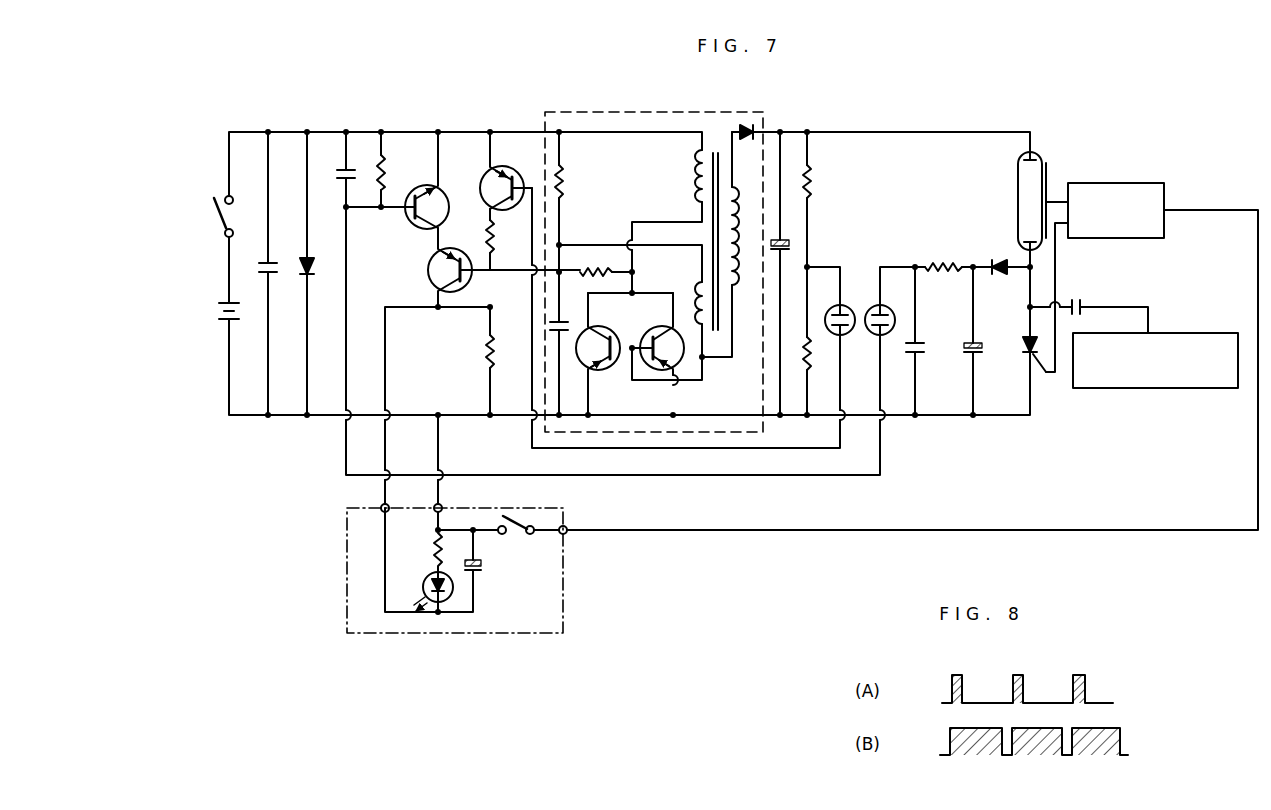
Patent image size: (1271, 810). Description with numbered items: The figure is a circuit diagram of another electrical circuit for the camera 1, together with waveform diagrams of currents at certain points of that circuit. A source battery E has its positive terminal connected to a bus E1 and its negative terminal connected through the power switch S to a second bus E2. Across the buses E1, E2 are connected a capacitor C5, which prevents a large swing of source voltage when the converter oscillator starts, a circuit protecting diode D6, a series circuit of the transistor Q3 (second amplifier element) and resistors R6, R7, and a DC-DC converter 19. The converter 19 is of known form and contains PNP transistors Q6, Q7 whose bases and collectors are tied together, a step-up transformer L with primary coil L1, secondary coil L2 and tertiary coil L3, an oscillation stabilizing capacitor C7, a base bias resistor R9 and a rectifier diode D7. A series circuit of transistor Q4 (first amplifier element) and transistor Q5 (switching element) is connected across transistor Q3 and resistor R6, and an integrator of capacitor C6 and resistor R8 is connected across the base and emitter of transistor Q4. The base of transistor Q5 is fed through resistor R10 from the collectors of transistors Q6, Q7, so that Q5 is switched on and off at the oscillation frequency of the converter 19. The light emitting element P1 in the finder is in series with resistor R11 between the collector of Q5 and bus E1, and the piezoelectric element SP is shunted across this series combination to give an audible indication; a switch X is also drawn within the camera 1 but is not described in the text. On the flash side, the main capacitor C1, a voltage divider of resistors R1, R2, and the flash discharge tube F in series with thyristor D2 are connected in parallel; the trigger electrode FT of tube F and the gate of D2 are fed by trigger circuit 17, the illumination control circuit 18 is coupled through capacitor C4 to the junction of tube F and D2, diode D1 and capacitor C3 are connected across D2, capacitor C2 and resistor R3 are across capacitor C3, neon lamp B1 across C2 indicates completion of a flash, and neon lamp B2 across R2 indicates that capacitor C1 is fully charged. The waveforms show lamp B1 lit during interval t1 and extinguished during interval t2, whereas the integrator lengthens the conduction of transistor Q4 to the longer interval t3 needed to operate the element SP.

In FIG. 7, the power switch S is at (219, 223).
In FIG. 7, the capacitor C5 is at (260, 265).
In FIG. 7, the source battery E is at (217, 316).
In FIG. 7, the circuit protecting diode D6 is at (310, 276).
In FIG. 7, the capacitor C6 is at (339, 172).
In FIG. 7, the resistor R8 is at (387, 168).
In FIG. 7, the transistor Q4 is at (444, 209).
In FIG. 8, the transistor Q4 is at (1022, 742).
In FIG. 7, the transistor Q5 is at (430, 292).
In FIG. 7, the transistor Q3 is at (512, 173).
In FIG. 7, the resistor R6 is at (496, 233).
In FIG. 7, the resistor R7 is at (492, 363).
In FIG. 7, the bus E2 is at (402, 131).
In FIG. 7, the bus E1 is at (319, 417).
In FIG. 7, the DC-DC converter 19 is at (640, 112).
In FIG. 7, the step-up transformer L is at (717, 136).
In FIG. 7, the rectifier diode D7 is at (748, 124).
In FIG. 7, the base bias resistor R9 is at (566, 178).
In FIG. 7, the resistor R10 is at (597, 268).
In FIG. 7, the tertiary coil L3 is at (696, 182).
In FIG. 7, the primary coil L1 is at (695, 292).
In FIG. 7, the secondary coil L2 is at (736, 282).
In FIG. 7, the oscillation stabilizing capacitor C7 is at (559, 323).
In FIG. 7, the transistor Q7 is at (656, 327).
In FIG. 7, the transistor Q6 is at (603, 370).
In FIG. 7, the main capacitor C1 is at (786, 249).
In FIG. 7, the resistor R1 is at (813, 180).
In FIG. 7, the resistor R2 is at (812, 365).
In FIG. 7, the neon lamp B2 is at (831, 306).
In FIG. 7, the light emitting element B1 is at (883, 306).
In FIG. 8, the light emitting element B1 is at (1015, 689).
In FIG. 7, the capacitor C2 is at (911, 353).
In FIG. 7, the capacitor C3 is at (967, 353).
In FIG. 7, the resistor R3 is at (941, 264).
In FIG. 7, the diode D1 is at (997, 260).
In FIG. 7, the main switching element D2 is at (1022, 339).
In FIG. 7, the capacitor C4 is at (1074, 298).
In FIG. 7, the flash discharge tube F is at (1018, 187).
In FIG. 7, the trigger electrode FT is at (1047, 176).
In FIG. 7, the trigger circuit 17 is at (1126, 183).
In FIG. 7, the illumination control circuit 18 is at (1171, 333).
In FIG. 7, the resistor R11 is at (431, 548).
In FIG. 7, the light emitting element P1 is at (423, 580).
In FIG. 7, the piezoelectric element SP is at (482, 567).
In FIG. 7, the synchro switch X is at (517, 531).
In FIG. 7, the camera 1 is at (455, 637).
In FIG. 8, the time interval t1 is at (955, 674).
In FIG. 8, the time interval t2 is at (979, 702).
In FIG. 8, the time interval t3 is at (986, 751).